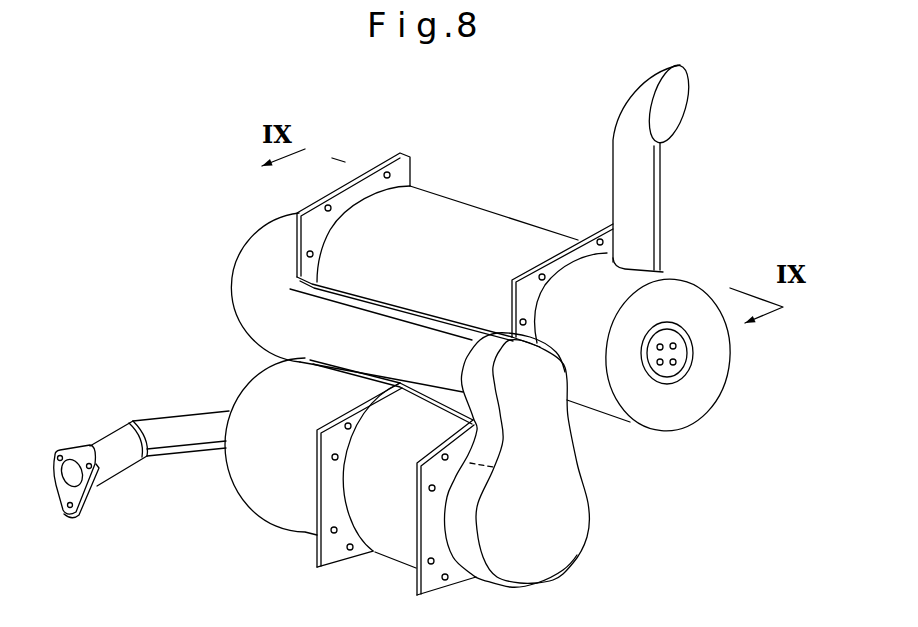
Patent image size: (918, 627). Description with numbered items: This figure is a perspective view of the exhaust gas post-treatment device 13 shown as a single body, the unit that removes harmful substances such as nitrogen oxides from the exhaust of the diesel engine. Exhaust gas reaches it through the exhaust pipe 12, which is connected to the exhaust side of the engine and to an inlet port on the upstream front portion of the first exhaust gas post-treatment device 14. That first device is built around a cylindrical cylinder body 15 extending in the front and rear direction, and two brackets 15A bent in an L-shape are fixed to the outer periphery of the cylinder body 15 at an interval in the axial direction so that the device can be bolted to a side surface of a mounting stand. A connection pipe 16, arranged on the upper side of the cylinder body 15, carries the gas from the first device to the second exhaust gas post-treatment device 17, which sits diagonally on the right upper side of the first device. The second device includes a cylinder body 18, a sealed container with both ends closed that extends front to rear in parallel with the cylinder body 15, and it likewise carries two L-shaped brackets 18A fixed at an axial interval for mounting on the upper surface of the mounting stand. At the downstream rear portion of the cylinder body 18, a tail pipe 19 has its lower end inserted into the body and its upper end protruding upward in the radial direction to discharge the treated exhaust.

The exhaust pipe 12 is at (123, 440).
The exhaust gas post-treatment device 13 is at (632, 467).
The first exhaust gas post-treatment device 14 is at (228, 487).
The cylinder body 15 is at (273, 408).
The brackets 15A is at (423, 573).
The connection pipe 16 is at (263, 295).
The second exhaust gas post-treatment device 17 is at (440, 192).
The cylinder body 18 is at (483, 243).
The brackets 18A is at (397, 163).
The tail pipe 19 is at (647, 182).